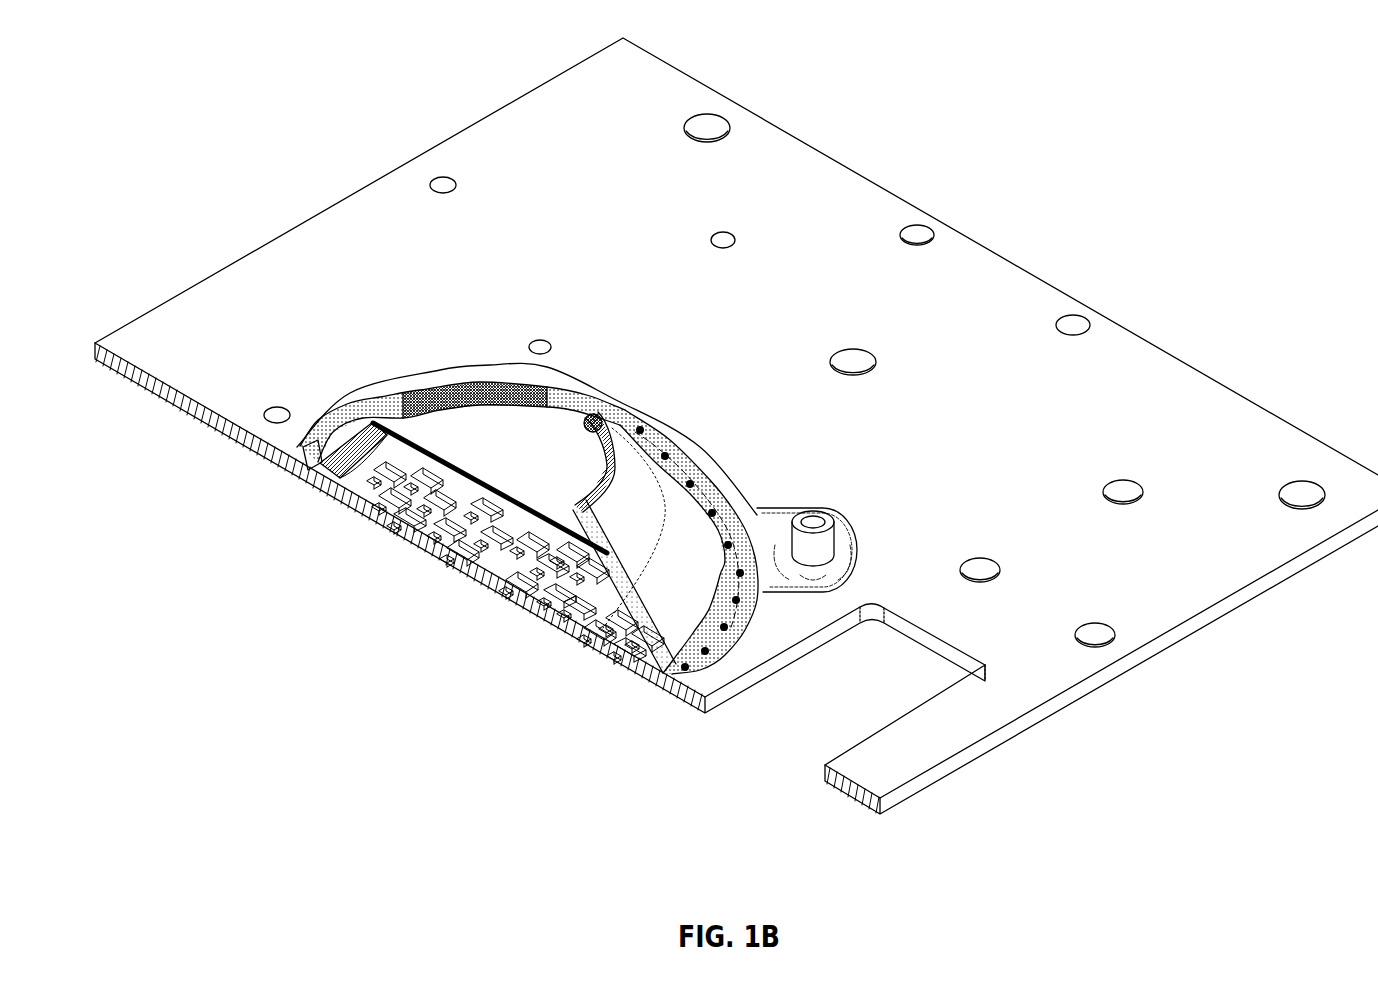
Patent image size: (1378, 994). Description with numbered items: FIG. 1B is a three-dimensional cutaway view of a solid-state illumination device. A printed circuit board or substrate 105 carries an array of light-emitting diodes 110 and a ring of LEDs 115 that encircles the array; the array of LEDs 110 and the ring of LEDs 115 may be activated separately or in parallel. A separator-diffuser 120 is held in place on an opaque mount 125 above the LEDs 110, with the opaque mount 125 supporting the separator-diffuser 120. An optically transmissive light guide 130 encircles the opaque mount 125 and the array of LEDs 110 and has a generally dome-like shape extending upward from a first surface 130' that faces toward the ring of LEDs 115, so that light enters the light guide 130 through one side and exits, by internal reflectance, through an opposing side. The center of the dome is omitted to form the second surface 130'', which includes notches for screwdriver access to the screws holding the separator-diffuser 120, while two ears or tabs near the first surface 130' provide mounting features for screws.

The substrate 105 is at (647, 93).
The array of light-emitting diodes 110 is at (500, 567).
The ring of LEDs 115 is at (718, 683).
The separator-diffuser 120 is at (547, 447).
The opaque mount 125 is at (620, 598).
The light guide 130 is at (502, 514).
The first surface 130' is at (271, 463).
The second surface 130'' is at (539, 385).